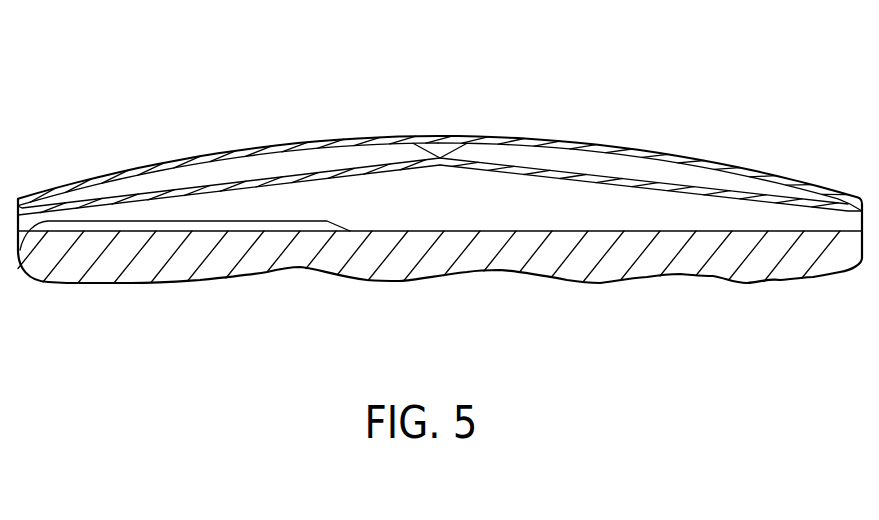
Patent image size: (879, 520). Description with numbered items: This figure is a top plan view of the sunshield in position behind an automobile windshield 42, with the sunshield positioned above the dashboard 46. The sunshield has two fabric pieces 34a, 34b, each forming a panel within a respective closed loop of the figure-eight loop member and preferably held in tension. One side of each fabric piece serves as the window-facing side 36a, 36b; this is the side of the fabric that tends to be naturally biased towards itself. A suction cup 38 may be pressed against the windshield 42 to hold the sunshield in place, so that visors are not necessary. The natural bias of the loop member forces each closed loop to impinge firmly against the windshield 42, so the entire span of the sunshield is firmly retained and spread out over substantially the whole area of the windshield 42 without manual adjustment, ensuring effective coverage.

The fabric piece 34a is at (183, 190).
The fabric piece 34b is at (665, 180).
The window-facing side 36a is at (112, 192).
The window-facing side 36b is at (581, 160).
The suction cup 38 is at (443, 147).
The windshield 42 is at (342, 140).
The dashboard 46 is at (710, 263).